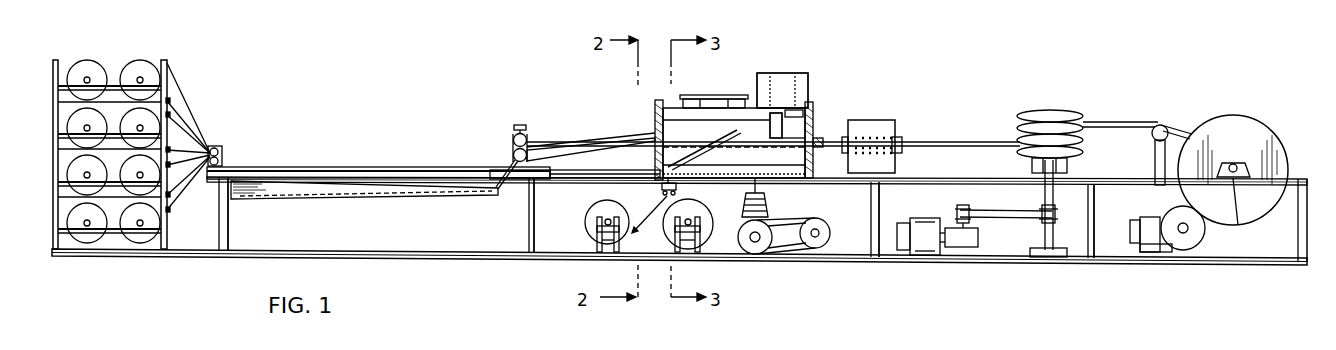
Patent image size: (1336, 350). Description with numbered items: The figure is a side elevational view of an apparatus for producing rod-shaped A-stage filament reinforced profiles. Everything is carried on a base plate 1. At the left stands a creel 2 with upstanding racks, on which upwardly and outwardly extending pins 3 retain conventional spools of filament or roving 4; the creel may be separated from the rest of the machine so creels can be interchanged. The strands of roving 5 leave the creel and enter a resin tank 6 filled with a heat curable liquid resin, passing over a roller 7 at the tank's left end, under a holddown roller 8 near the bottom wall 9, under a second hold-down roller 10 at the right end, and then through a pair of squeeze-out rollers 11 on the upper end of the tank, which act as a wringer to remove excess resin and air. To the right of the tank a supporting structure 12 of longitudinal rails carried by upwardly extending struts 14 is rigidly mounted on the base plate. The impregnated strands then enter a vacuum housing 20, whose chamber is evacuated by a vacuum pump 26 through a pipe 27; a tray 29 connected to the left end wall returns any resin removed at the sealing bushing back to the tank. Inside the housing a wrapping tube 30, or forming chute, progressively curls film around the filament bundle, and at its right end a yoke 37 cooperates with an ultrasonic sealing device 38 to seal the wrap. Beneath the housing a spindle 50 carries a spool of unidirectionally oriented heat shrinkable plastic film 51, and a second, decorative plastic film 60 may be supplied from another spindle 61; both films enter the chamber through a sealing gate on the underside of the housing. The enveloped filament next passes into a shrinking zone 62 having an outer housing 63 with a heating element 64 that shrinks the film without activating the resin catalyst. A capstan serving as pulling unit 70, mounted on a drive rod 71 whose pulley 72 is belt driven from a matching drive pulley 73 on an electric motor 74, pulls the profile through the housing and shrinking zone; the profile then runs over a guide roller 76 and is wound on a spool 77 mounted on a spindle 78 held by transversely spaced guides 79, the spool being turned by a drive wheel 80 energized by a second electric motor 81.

The base plate 1 is at (420, 259).
The creel 2 is at (168, 61).
The pins 3 is at (140, 77).
The spools of filament or roving 4 is at (97, 65).
The strands 5 is at (185, 131).
The resin tank 6 is at (373, 165).
The roller 7 is at (222, 152).
The holddown roller 8 is at (246, 188).
The bottom wall 9 is at (372, 197).
The second hold-down roller 10 is at (490, 185).
The squeeze-out rollers 11 is at (514, 138).
The supporting structure 12 is at (563, 168).
The struts 14 is at (867, 242).
The vacuum housing 20 is at (706, 118).
The vacuum pump 26 is at (774, 217).
The pipe 27 is at (750, 199).
The tray 29 is at (600, 148).
The wrapping tube 30 is at (642, 141).
The yoke 37 is at (808, 117).
The ultrasonic sealing device 38 is at (807, 90).
The spindle 50 is at (688, 253).
The plastic film 51 is at (712, 238).
The second plastic film 60 is at (600, 203).
The spindle 61 is at (600, 232).
The shrinking zone 62 is at (894, 117).
The outer housing 63 is at (903, 140).
The heating element 64 is at (895, 153).
The pulling unit 70 is at (1040, 108).
The drive rod 71 is at (1046, 192).
The pulley 72 is at (1062, 213).
The drive pulley 73 is at (957, 210).
The electric motor 74 is at (928, 240).
The guide roller 76 is at (1160, 124).
The spool 77 is at (1240, 118).
The spindle 78 is at (1236, 166).
The guides 79 is at (1244, 180).
The drive wheel 80 is at (1205, 229).
The electric motor 81 is at (1155, 252).